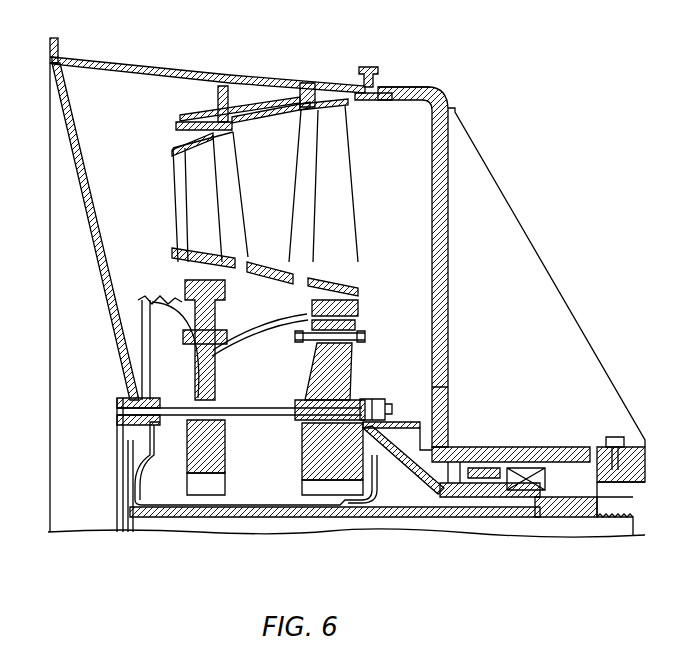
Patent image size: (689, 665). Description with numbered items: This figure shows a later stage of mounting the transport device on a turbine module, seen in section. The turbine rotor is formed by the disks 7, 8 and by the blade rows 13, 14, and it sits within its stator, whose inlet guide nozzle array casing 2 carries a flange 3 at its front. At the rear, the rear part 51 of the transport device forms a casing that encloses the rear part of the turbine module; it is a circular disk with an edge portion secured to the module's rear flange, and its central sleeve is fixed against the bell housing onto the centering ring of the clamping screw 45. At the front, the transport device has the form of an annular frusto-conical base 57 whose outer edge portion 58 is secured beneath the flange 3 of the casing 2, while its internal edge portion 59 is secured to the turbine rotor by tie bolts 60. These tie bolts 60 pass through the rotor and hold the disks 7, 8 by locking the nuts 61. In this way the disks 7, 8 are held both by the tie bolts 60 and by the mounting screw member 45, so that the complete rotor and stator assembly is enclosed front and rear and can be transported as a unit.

The inlet guide nozzle array casing 2 is at (196, 71).
The flange 3 is at (59, 57).
The disk 7 is at (227, 469).
The disk 8 is at (302, 472).
The blade row 13 is at (216, 201).
The blade row 14 is at (348, 201).
The clamping screw 45 is at (319, 527).
The rear part of transport device 51 is at (449, 326).
The front part of transport device 57 is at (101, 262).
The outer edge portion 58 is at (50, 63).
The internal edge portion 59 is at (117, 425).
The tie bolts 60 is at (262, 405).
The nuts 61 is at (370, 404).